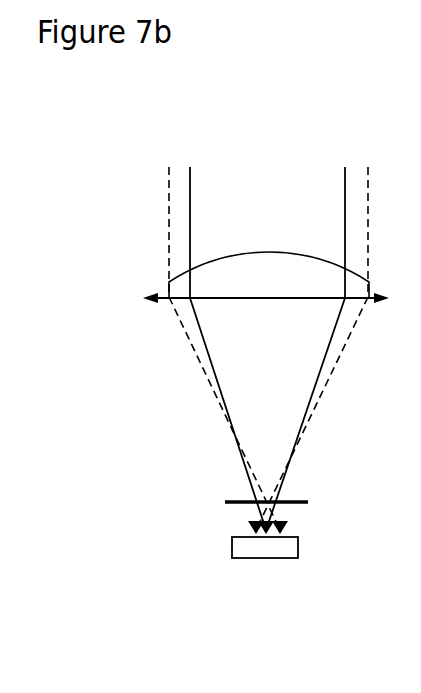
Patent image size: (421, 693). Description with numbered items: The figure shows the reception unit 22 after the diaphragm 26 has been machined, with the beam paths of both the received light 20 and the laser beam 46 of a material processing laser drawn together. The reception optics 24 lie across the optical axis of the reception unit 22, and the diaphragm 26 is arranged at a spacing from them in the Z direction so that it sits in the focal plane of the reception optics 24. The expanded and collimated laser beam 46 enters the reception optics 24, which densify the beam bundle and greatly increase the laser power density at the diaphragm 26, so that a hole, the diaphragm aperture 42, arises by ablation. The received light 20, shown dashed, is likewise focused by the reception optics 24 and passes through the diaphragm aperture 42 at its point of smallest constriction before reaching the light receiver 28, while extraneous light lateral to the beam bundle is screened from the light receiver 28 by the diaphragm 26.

The received light 20 is at (168, 246).
The reception unit 22 is at (118, 358).
The reception optics 24 is at (253, 282).
The diaphragm 26 is at (228, 504).
The light receiver 28 is at (273, 558).
The diaphragm aperture 42 is at (262, 485).
The laser beam 46 is at (192, 223).